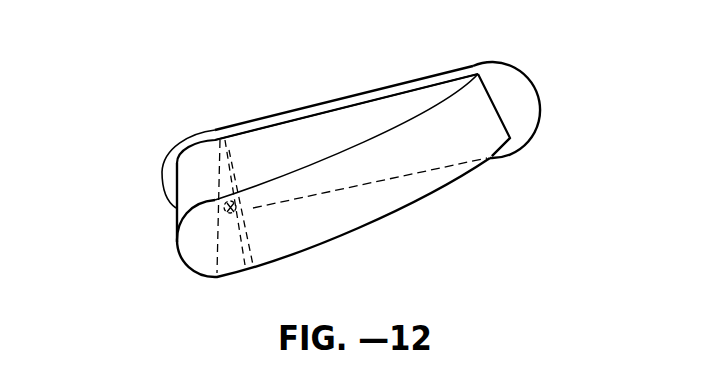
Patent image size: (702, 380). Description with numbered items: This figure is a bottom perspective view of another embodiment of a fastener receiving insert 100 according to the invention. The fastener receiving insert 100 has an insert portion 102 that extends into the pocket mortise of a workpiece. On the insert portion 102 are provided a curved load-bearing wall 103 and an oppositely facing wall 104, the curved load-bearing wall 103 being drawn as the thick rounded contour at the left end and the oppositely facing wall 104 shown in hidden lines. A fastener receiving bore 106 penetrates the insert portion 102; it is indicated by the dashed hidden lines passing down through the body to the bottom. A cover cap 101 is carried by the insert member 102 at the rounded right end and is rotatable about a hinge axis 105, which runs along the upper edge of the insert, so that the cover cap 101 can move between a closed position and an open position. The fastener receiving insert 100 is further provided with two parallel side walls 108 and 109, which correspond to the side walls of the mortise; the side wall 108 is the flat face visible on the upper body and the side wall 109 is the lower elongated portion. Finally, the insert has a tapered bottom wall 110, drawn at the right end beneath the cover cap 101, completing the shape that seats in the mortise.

The fastener receiving insert 100 is at (340, 68).
The cover cap 101 is at (465, 60).
The insert portion 102 is at (203, 148).
The curved load-bearing wall 103 is at (177, 214).
The oppositely facing wall 104 is at (262, 266).
The hinge axis 105 is at (233, 122).
The fastener receiving bore 106 is at (218, 279).
The side wall 108 is at (325, 142).
The side wall 109 is at (357, 205).
The tapered bottom wall 110 is at (465, 133).